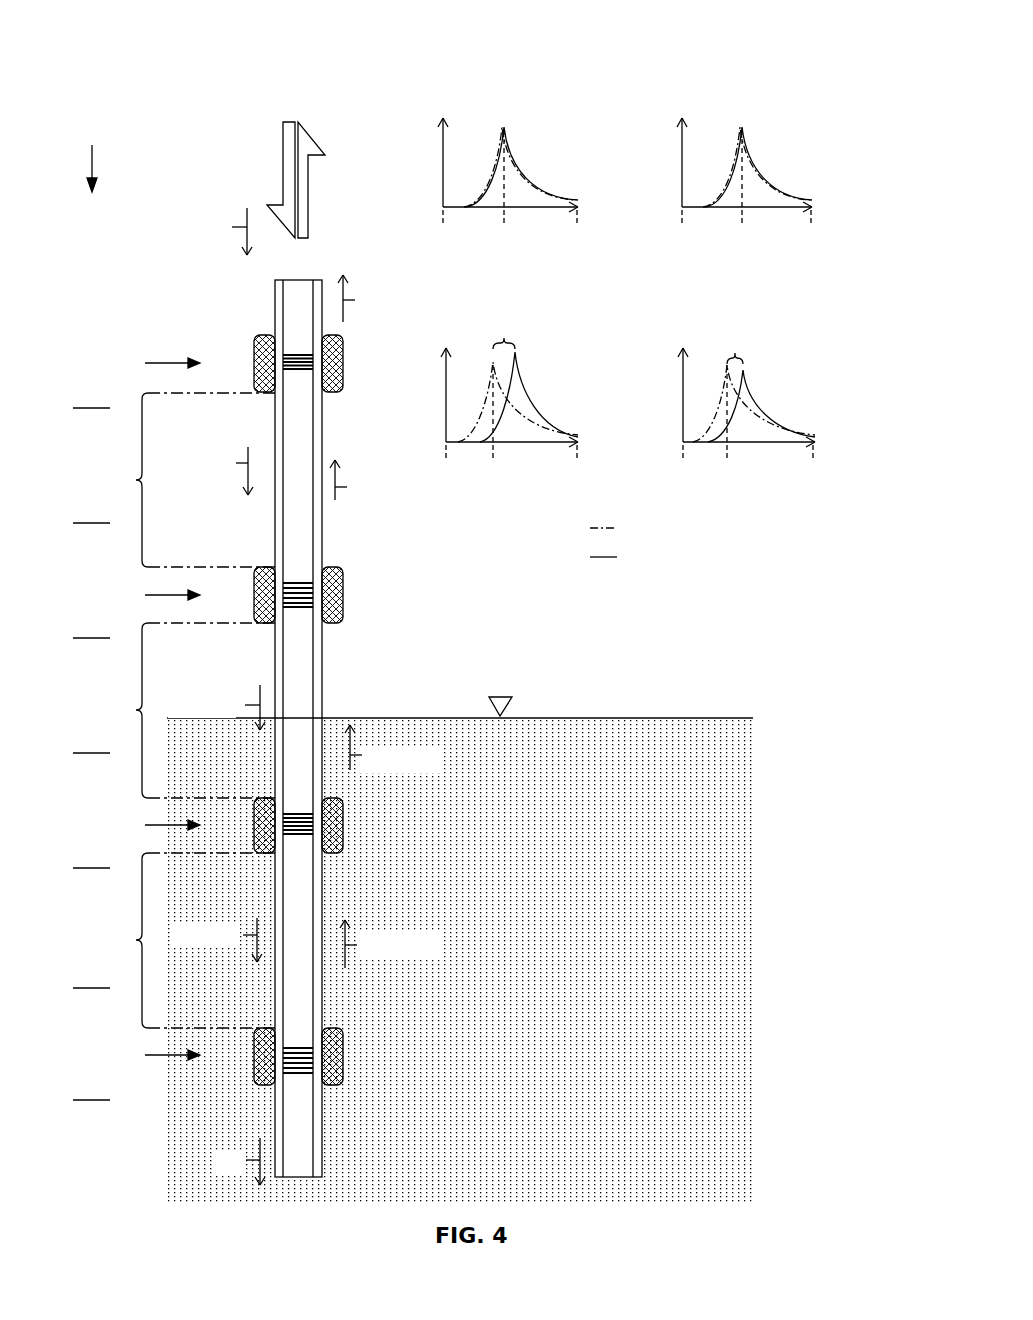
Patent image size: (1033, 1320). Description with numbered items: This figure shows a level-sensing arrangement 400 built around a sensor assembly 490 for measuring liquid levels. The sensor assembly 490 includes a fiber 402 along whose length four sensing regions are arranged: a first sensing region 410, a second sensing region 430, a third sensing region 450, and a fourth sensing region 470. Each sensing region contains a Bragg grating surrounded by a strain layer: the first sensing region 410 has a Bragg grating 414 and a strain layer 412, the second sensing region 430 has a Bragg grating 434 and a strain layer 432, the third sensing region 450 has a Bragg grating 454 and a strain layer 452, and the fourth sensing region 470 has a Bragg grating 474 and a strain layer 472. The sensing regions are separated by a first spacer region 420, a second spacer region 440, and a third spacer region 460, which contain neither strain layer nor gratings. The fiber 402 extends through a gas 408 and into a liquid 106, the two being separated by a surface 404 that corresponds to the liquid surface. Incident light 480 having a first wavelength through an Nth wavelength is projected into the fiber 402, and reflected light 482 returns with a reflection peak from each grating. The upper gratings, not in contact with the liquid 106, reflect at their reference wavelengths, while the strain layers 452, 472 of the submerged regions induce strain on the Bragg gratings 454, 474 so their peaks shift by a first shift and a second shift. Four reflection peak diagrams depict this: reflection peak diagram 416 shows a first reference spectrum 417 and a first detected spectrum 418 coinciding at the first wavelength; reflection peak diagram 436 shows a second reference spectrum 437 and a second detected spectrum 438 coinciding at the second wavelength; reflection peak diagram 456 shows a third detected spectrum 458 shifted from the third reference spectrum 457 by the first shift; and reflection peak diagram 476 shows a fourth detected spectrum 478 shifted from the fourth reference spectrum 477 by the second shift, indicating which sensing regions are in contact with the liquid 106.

The sensing system 400 is at (113, 28).
The sensor assembly 490 is at (113, 271).
The incident light 480 is at (283, 167).
The reflected light 482 is at (380, 241).
The fiber 402 is at (274, 297).
The strain layer 412 is at (265, 335).
The Bragg grating 414 is at (306, 372).
The first sensing region 410 is at (161, 373).
The first spacer region 420 is at (207, 480).
The strain layer 432 is at (267, 567).
The Bragg grating 434 is at (307, 608).
The second sensing region 430 is at (161, 603).
The second spacer region 440 is at (242, 710).
The strain layer 452 is at (270, 798).
The Bragg grating 454 is at (308, 836).
The third sensing region 450 is at (161, 833).
The third spacer region 460 is at (241, 940).
The strain layer 472 is at (270, 1028).
The Bragg grating 474 is at (308, 1078).
The fourth sensing region 470 is at (123, 1064).
The surface 404 is at (548, 700).
The gas 408 is at (692, 698).
The liquid 106 is at (697, 760).
The reflection peak diagram 416 is at (511, 170).
The first reference spectrum 417 is at (494, 165).
The first detected spectrum 418 is at (505, 135).
The reflection peak diagram 436 is at (746, 170).
The second reference spectrum 437 is at (732, 165).
The second detected spectrum 438 is at (743, 135).
The reflection peak diagram 456 is at (520, 391).
The third reference spectrum 457 is at (490, 392).
The third detected spectrum 458 is at (517, 368).
The reflection peak diagram 476 is at (749, 391).
The fourth reference spectrum 477 is at (726, 395).
The fourth detected spectrum 478 is at (747, 375).